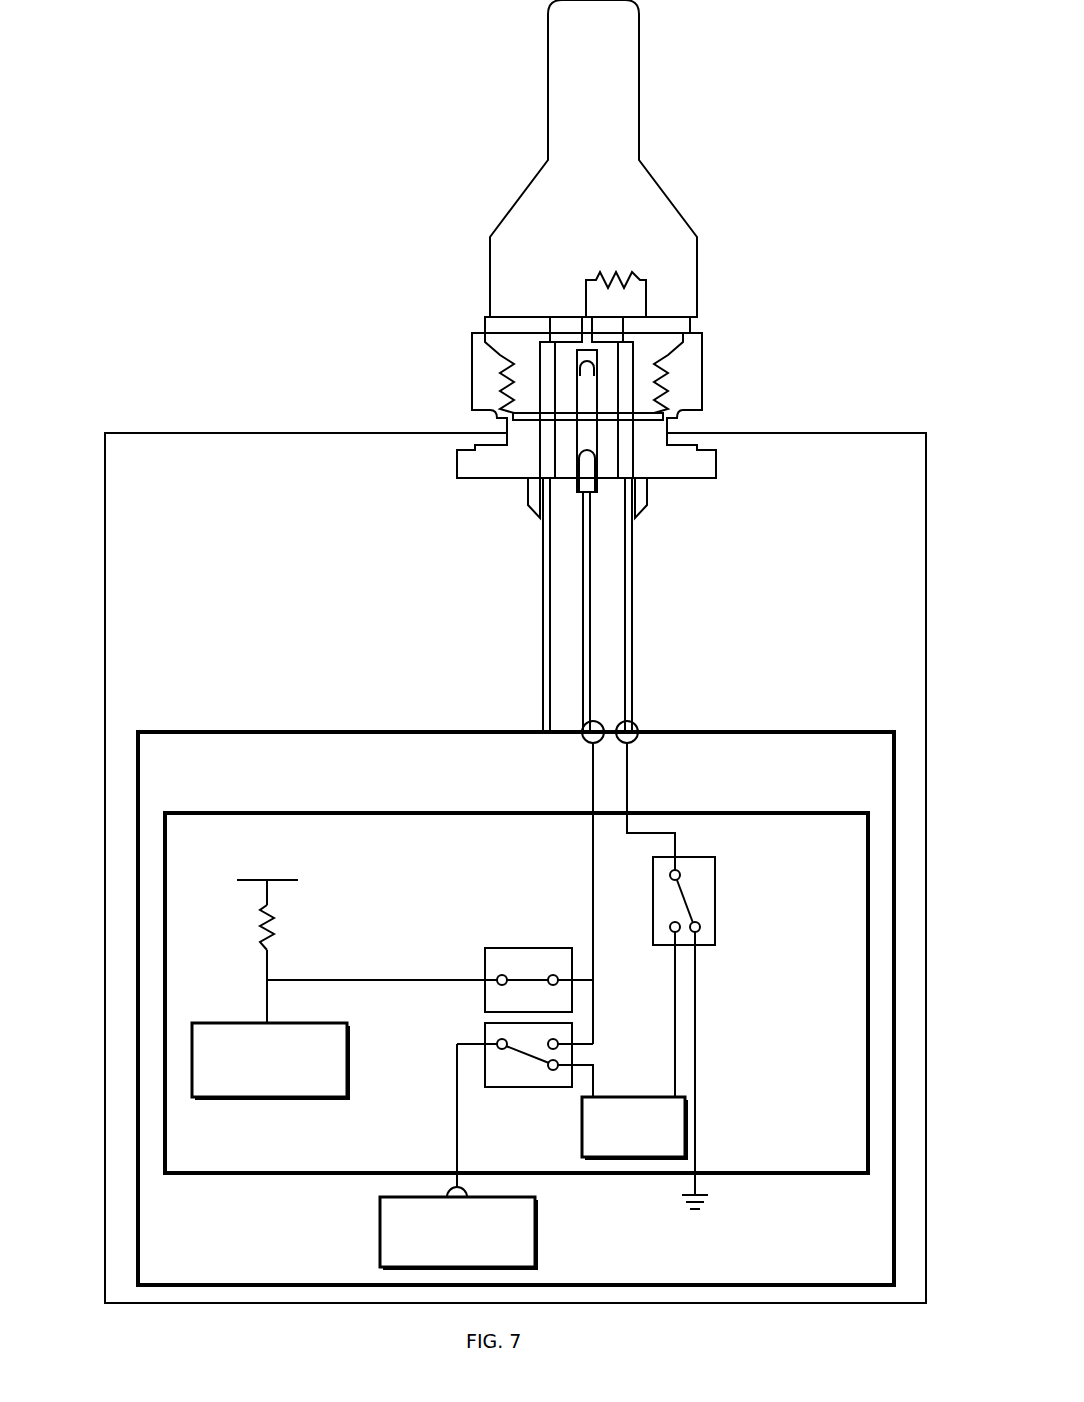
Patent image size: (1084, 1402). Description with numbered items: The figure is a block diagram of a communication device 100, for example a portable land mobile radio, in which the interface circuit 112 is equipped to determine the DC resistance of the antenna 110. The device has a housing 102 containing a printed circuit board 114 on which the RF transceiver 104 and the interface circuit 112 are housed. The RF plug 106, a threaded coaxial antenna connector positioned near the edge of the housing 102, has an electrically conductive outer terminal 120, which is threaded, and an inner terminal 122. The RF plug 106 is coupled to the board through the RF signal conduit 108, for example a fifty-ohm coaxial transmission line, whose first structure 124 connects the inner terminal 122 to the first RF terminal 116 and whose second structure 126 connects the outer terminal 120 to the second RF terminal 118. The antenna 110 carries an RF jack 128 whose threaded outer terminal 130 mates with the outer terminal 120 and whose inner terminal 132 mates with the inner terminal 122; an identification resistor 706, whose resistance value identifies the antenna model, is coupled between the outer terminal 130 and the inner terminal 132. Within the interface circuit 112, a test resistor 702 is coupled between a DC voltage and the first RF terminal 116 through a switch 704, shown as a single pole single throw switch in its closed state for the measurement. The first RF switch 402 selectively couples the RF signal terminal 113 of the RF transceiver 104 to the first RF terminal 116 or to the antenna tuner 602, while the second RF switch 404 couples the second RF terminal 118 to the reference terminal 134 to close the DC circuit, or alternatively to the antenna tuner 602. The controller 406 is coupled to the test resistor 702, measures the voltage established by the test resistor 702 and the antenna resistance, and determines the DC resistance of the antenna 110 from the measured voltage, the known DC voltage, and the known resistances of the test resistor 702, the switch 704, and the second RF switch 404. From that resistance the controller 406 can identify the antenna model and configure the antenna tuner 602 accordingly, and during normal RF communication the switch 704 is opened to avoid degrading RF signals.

The communication device 100 is at (272, 80).
The housing 102 is at (172, 433).
The RF transceiver 104 is at (380, 1232).
The RF plug 106 is at (457, 470).
The RF signal conduit 108 is at (543, 565).
The antenna 110 is at (578, 97).
The interface circuit 112 is at (242, 1173).
The RF signal terminal 113 is at (450, 1190).
The printed circuit board 114 is at (265, 732).
The first RF terminal 116 is at (587, 742).
The second RF terminal 118 is at (632, 742).
The outer terminal 120 is at (688, 378).
The inner terminal 122 is at (585, 432).
The first structure 124 is at (592, 560).
The second structure 126 is at (545, 628).
The RF jack 128 is at (690, 325).
The outer terminal 130 is at (520, 350).
The inner terminal 132 is at (580, 320).
The reference terminal 134 is at (705, 1195).
The first RF switch 402 is at (485, 1040).
The second RF switch 404 is at (716, 893).
The controller 406 is at (228, 1023).
The antenna tuner 602 is at (582, 1128).
The test resistor 702 is at (275, 925).
The switch 704 is at (525, 948).
The identification resistor 706 is at (623, 290).